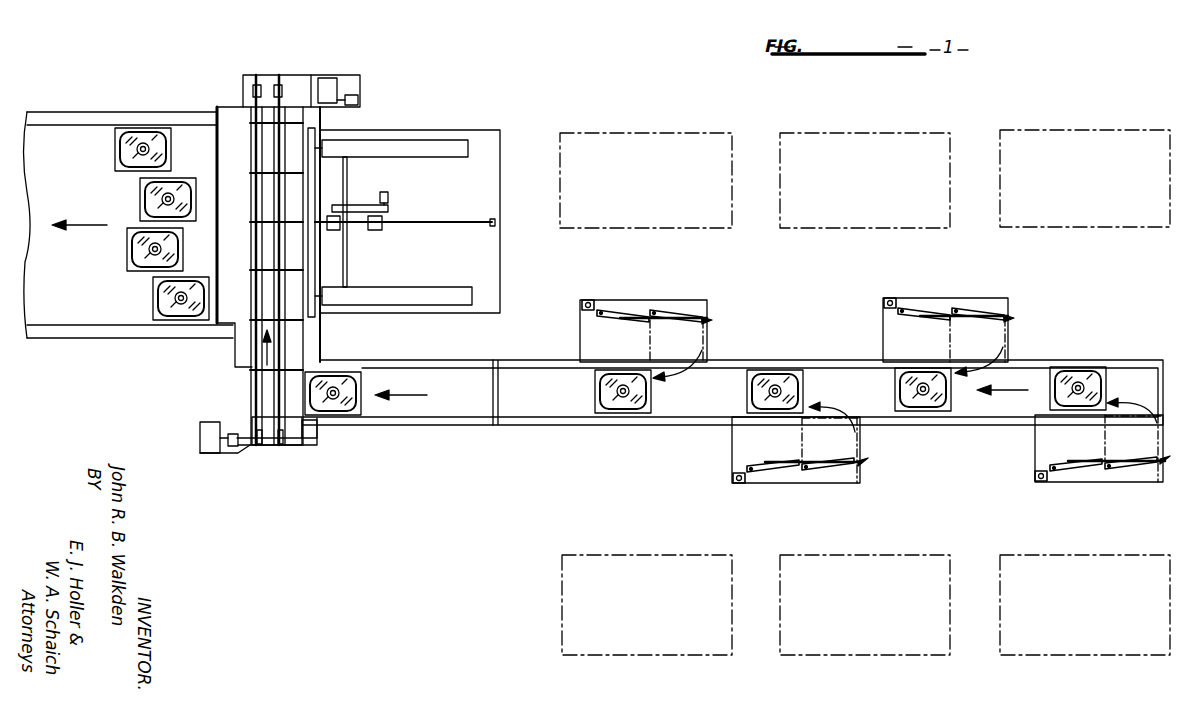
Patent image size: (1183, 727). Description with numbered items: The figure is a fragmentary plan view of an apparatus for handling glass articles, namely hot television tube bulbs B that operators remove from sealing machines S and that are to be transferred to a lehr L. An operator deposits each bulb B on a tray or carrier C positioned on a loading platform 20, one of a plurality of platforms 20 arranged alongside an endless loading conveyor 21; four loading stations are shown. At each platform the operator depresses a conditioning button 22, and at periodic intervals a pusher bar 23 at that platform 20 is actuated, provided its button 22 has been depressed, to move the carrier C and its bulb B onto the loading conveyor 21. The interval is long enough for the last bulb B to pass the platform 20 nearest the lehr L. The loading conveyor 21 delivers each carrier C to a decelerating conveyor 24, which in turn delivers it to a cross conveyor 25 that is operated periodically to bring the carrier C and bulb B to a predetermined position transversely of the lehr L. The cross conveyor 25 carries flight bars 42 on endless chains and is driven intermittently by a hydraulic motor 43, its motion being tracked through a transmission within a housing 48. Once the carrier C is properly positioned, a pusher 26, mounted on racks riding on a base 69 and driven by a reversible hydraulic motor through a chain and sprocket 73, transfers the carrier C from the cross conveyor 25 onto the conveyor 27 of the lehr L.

The lehr L is at (117, 72).
The conveyor of the lehr 27 is at (188, 134).
The television tube bulb B is at (130, 154).
The tray or carrier C is at (141, 176).
The flight bars 42 is at (270, 270).
The hydraulic motor 43 is at (333, 78).
The pusher 26 is at (313, 143).
The base 69 is at (482, 137).
The sprocket 73 is at (456, 203).
The cross conveyor 25 is at (228, 358).
The housing 48 is at (200, 438).
The decelerating conveyor 24 is at (395, 436).
The endless loading conveyor 21 is at (560, 436).
The loading platform 20 is at (650, 312).
The conditioning button 22 is at (590, 302).
The pusher bar 23 is at (648, 322).
The sealing machine S is at (658, 142).